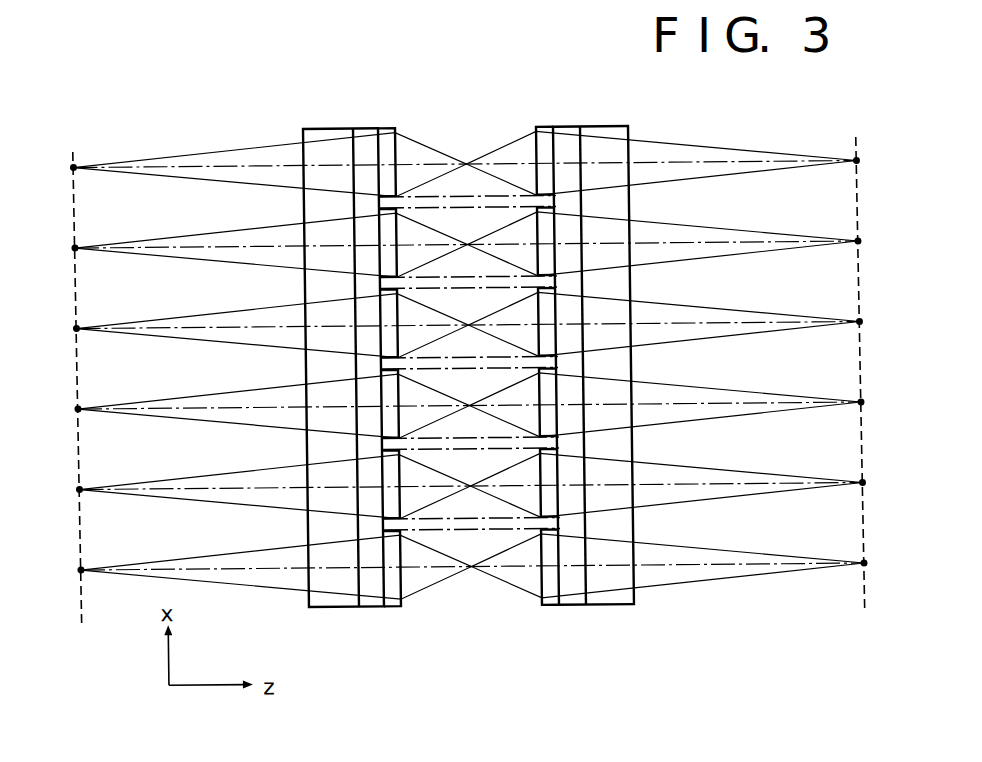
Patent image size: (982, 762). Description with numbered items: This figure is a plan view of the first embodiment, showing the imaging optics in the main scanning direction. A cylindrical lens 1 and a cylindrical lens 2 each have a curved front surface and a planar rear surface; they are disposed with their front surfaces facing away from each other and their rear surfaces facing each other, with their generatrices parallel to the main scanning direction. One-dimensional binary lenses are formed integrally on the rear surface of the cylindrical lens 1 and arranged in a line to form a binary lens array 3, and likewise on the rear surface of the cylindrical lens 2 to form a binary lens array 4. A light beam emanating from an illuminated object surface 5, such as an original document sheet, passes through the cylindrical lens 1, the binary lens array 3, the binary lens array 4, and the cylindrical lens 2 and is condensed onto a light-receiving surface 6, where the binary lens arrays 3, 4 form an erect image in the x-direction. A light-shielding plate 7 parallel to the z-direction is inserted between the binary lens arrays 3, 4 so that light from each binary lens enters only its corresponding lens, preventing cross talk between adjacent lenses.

The cylindrical lens 1 is at (318, 129).
The cylindrical lens 2 is at (609, 129).
The binary lens array 3 is at (385, 120).
The binary lens array 4 is at (543, 120).
The object surface 5 is at (74, 151).
The light-receiving surface 6 is at (856, 149).
The light-shielding plate 7 is at (438, 197).